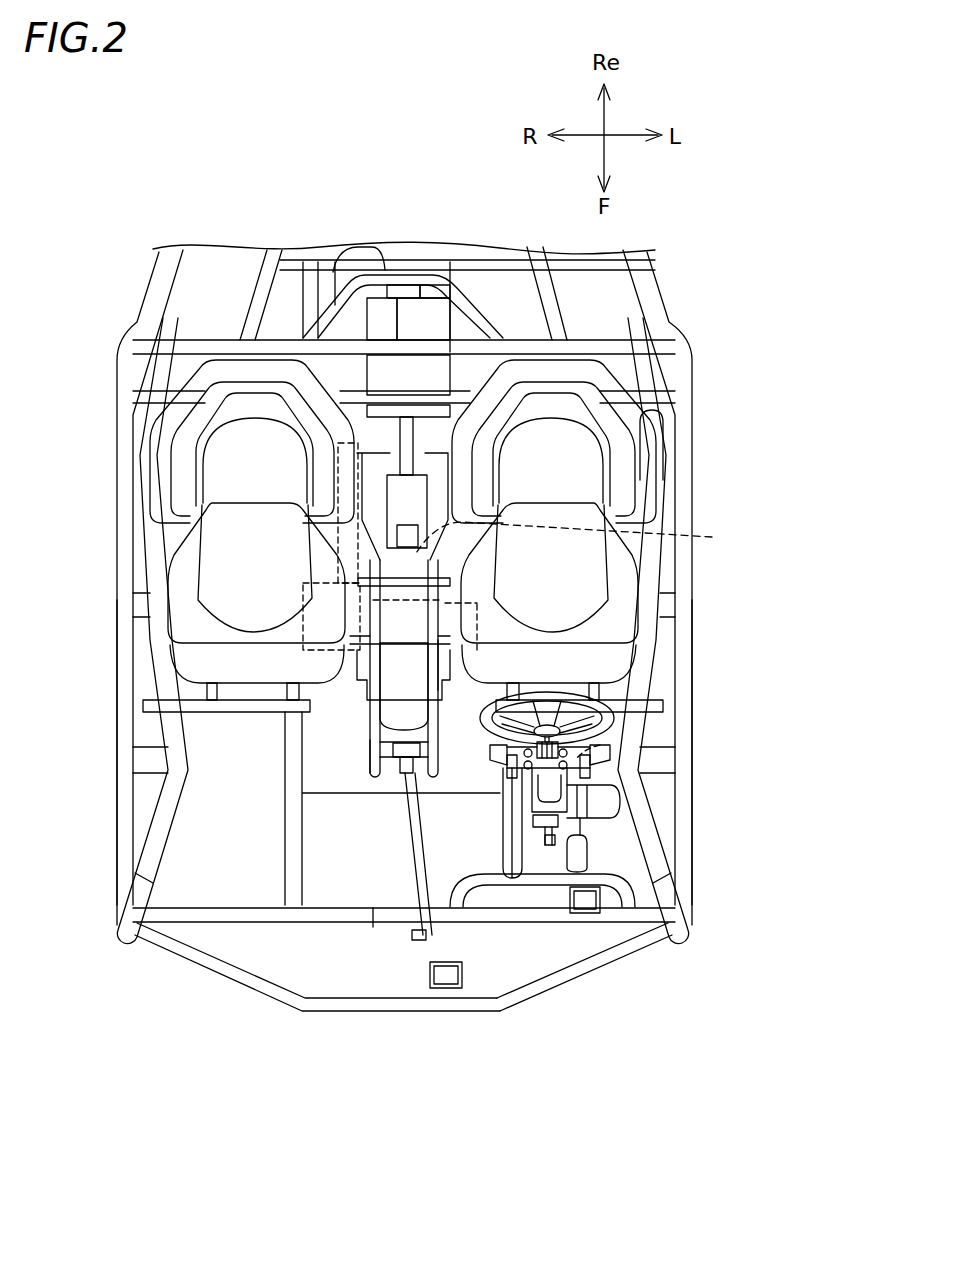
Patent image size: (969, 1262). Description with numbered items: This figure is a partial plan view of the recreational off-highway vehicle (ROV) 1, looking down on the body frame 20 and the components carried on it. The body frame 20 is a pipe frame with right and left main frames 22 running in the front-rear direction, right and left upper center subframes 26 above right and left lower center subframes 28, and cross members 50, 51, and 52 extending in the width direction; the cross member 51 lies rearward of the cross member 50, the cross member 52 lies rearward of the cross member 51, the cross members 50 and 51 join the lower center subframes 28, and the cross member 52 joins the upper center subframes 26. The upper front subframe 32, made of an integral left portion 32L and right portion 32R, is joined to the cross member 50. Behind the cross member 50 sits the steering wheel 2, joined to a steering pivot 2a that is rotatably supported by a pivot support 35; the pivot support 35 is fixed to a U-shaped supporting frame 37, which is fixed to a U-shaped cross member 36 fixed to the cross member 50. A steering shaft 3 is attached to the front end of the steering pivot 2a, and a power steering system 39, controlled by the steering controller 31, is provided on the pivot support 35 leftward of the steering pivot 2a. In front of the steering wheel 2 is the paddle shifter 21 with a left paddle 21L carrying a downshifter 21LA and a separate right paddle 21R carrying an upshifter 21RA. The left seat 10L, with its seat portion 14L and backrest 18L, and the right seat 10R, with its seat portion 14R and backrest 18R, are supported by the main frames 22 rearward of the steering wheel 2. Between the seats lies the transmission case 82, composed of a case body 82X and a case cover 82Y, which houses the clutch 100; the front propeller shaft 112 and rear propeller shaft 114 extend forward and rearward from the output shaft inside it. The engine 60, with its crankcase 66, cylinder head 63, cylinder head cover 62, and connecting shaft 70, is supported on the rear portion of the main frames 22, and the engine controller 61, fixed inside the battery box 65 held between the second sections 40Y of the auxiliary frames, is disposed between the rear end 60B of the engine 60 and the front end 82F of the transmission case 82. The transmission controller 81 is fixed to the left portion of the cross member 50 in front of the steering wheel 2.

The recreational off-highway vehicle (ROV) 1 is at (668, 249).
The steering wheel 2 is at (607, 707).
The steering pivot 2a is at (600, 727).
The steering shaft 3 is at (662, 905).
The right seat 10R is at (202, 378).
The left seat 10L is at (606, 378).
The seat portion (right seat) 14R is at (230, 588).
The seat portion (left seat) 14L is at (600, 583).
The backrest (right seat) 18R is at (222, 447).
The backrest (left seat) 18L is at (505, 462).
The body frame 20 is at (661, 288).
The paddle shifter 21 is at (611, 740).
The left paddle 21L is at (605, 752).
The right paddle 21R is at (490, 765).
The downshifter 21LA is at (600, 745).
The upshifter 21RA is at (477, 650).
The main frame 22 is at (288, 870).
The upper center subframe 26 is at (173, 798).
The lower center subframe 28 is at (123, 838).
The steering controller 31 is at (447, 985).
The upper front subframe 32 is at (383, 1010).
The right portion (of upper front subframe) 32R is at (273, 993).
The left portion (of upper front subframe) 32L is at (643, 940).
The pivot support 35 is at (615, 800).
The cross member (U-shaped) 36 is at (590, 915).
The supporting frame 37 is at (561, 878).
The power steering system 39 is at (612, 850).
The second section (of auxiliary frame) 40Y is at (377, 750).
The cross member 50 is at (370, 913).
The cross member 51 is at (442, 317).
The cross member 52 is at (218, 345).
The engine 60 is at (318, 279).
The rear end (of engine) 60B is at (356, 250).
The engine controller 61 is at (383, 487).
The cylinder head cover 62 is at (422, 352).
The cylinder head 63 is at (383, 313).
The battery box 65 is at (398, 530).
The crankcase 66 is at (337, 283).
The connecting shaft 70 is at (320, 528).
The transmission controller 81 is at (587, 905).
The transmission case 82 is at (400, 682).
The front end (of transmission case) 82F is at (400, 727).
The case body 82X is at (454, 668).
The case cover 82Y is at (293, 557).
The clutch 100 is at (583, 538).
The front propeller shaft 112 is at (414, 935).
The rear propeller shaft 114 is at (652, 413).